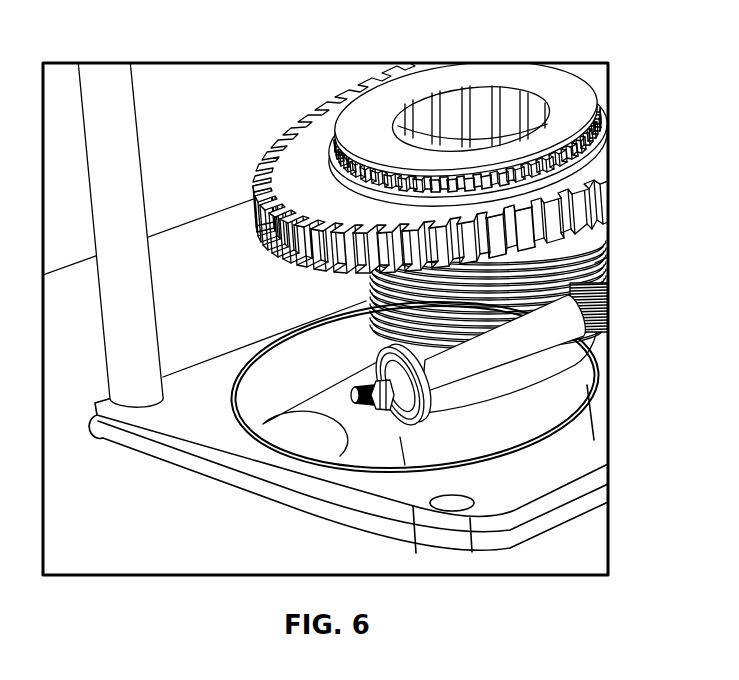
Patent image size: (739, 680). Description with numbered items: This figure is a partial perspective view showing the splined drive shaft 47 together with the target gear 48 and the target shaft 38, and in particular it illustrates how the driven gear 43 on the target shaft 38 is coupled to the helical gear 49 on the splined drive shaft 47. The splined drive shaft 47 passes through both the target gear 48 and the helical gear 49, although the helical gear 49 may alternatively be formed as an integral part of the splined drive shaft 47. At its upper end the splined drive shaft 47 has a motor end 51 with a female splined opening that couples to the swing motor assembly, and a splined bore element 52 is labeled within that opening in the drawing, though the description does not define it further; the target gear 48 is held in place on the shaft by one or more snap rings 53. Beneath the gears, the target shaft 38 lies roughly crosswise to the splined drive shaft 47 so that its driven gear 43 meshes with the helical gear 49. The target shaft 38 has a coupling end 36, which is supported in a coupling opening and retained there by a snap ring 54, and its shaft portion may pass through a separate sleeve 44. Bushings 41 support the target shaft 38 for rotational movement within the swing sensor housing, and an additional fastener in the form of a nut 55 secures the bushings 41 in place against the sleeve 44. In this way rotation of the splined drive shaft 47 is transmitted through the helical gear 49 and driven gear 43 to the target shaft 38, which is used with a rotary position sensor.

The coupling end 36 is at (353, 398).
The target shaft 38 is at (536, 350).
The bushings 41 is at (424, 408).
The driven gear 43 is at (602, 300).
The sleeve 44 is at (500, 348).
The splined drive shaft 47 is at (545, 78).
The target gear 48 is at (296, 101).
The helical gear 49 is at (373, 300).
The motor end 51 is at (441, 90).
The splined bore 52 is at (473, 108).
The snap rings 53 is at (598, 138).
The snap ring 54 is at (372, 360).
The nut 55 is at (393, 418).